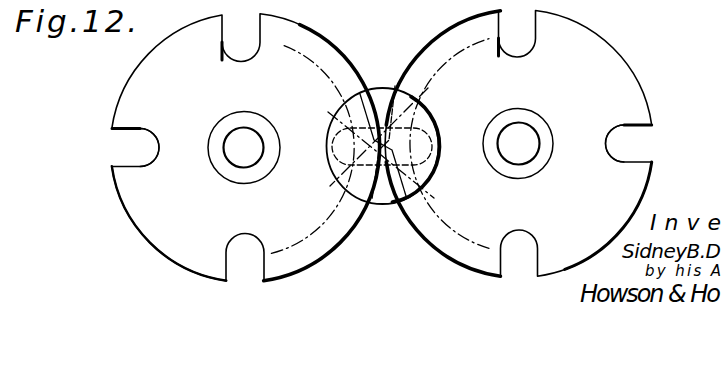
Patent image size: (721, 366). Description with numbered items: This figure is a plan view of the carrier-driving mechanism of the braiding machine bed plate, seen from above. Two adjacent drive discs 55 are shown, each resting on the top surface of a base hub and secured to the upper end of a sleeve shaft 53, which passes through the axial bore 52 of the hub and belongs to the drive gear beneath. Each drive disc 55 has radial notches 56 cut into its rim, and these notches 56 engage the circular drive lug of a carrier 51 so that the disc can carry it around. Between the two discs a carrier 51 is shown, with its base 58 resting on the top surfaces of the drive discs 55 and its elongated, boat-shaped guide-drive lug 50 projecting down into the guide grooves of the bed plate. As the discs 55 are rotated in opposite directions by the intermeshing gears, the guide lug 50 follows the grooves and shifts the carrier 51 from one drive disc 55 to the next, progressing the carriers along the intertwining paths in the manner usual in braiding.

The guide-drive lug 50 is at (357, 93).
The carrier 51 is at (336, 173).
The axial bore 52 is at (382, 146).
The sleeve shaft 53 is at (262, 116).
The drive disc 55 is at (129, 79).
The radial notch 56 is at (146, 128).
The base of the carrier 58 is at (429, 117).